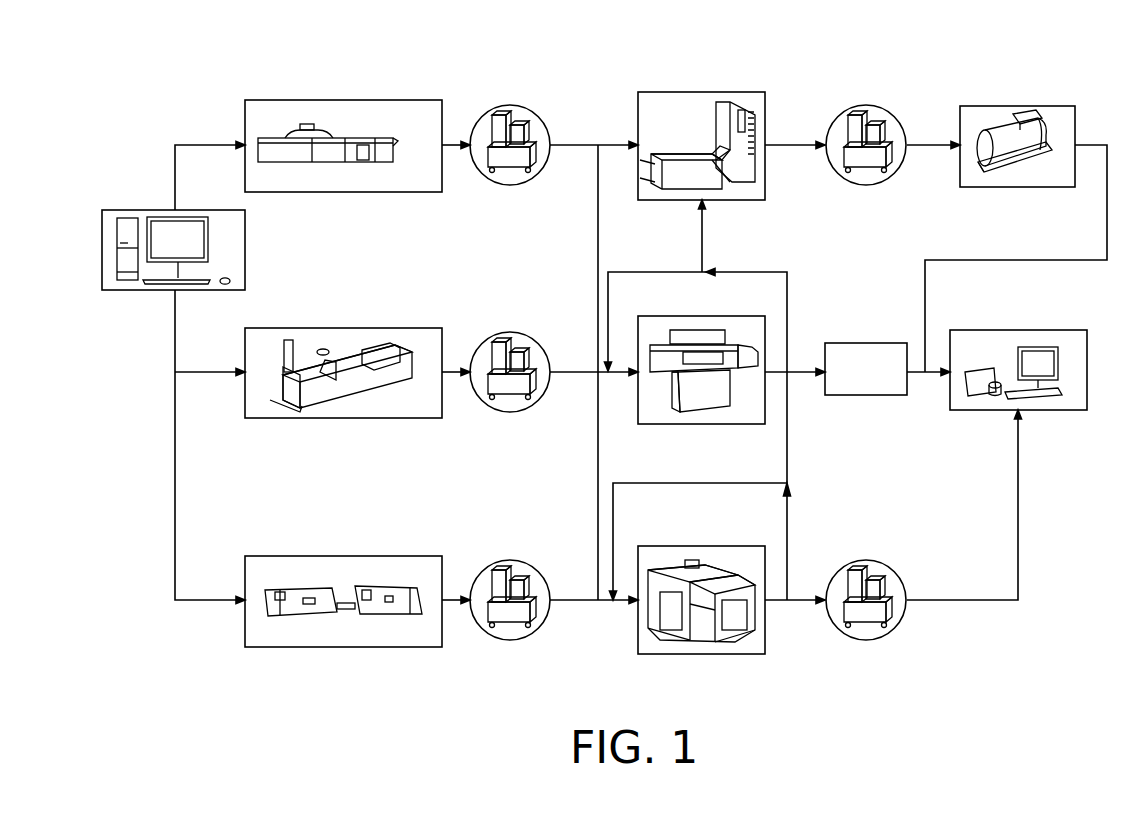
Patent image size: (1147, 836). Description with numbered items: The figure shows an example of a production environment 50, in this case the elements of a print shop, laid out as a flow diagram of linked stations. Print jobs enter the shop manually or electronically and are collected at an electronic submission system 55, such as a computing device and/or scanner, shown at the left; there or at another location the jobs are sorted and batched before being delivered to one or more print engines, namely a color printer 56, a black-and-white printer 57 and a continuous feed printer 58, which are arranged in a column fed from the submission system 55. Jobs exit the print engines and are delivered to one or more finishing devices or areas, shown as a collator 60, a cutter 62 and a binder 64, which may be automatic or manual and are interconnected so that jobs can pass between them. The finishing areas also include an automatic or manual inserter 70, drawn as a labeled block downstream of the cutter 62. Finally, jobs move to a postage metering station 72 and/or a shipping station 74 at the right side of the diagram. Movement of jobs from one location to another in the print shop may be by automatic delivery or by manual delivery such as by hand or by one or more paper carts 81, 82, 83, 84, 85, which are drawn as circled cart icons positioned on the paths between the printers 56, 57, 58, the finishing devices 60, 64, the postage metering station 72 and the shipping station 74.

The production environment 50 is at (198, 86).
The electronic submission system 55 is at (133, 290).
The color printer 56 is at (360, 192).
The black-and-white printer 57 is at (360, 418).
The continuous feed printer 58 is at (360, 647).
The collator 60 is at (708, 200).
The cutter 62 is at (712, 424).
The binder 64 is at (710, 654).
The inserter 70 is at (862, 395).
The postage metering station 72 is at (1012, 187).
The shipping station 74 is at (1043, 410).
The paper cart 81 is at (508, 185).
The paper cart 82 is at (508, 412).
The paper cart 83 is at (508, 640).
The paper cart 84 is at (866, 185).
The paper cart 85 is at (866, 640).